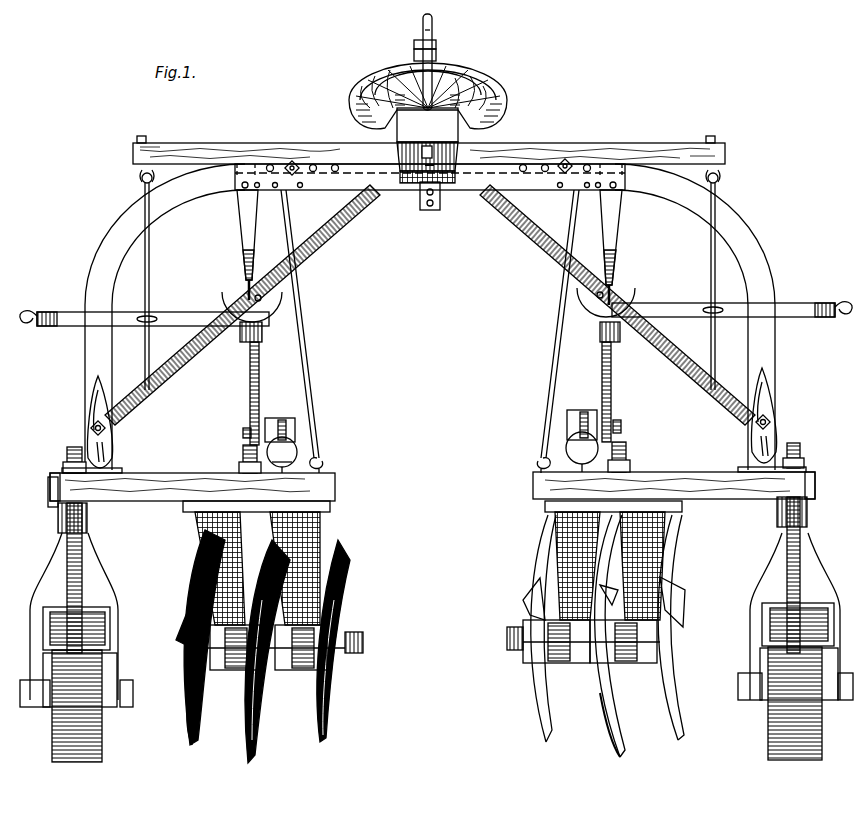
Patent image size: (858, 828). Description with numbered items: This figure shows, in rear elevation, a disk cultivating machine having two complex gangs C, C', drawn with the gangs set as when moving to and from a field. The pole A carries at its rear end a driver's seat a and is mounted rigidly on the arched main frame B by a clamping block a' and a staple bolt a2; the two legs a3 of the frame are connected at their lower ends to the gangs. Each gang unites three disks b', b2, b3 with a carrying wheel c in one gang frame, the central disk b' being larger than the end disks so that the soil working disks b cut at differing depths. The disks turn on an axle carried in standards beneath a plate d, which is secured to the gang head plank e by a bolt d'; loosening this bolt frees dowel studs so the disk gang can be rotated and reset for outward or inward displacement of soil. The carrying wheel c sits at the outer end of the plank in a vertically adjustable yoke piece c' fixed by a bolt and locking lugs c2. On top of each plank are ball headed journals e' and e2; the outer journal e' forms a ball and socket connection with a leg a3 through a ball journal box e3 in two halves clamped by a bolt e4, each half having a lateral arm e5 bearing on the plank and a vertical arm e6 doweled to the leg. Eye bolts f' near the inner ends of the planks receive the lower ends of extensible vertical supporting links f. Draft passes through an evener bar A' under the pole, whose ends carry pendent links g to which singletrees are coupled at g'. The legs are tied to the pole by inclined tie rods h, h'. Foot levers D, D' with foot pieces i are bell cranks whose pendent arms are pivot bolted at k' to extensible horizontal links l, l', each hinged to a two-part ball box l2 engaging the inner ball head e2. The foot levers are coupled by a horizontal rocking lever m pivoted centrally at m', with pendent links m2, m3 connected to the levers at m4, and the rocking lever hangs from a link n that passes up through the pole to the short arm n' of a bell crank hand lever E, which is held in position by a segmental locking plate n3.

The bell crank hand lever E is at (432, 58).
The short arm of hand lever n' is at (414, 41).
The segmental locking plate n3 is at (414, 56).
The driver's seat a is at (428, 92).
The pole A is at (427, 125).
The evener bar A' is at (429, 143).
The clamping block a' is at (419, 184).
The staple bolt a2 is at (440, 190).
The central pivot of rocking lever m' is at (416, 203).
The rocking lever m is at (430, 183).
The link n is at (436, 211).
The arched main frame B is at (430, 316).
The pendent link g is at (430, 280).
The singletree coupling g' is at (436, 302).
The link m2 is at (243, 222).
The link m3 is at (620, 227).
The foot piece i is at (268, 308).
The coupling of pendent link to foot lever m4 is at (242, 338).
The tie rod h is at (242, 305).
The tie rod h' is at (617, 305).
The foot lever D is at (262, 393).
The foot lever D' is at (620, 392).
The supporting link f is at (430, 324).
The eye bolt f' is at (430, 464).
The leg of arched frame a3 is at (92, 382).
The vertical arm of journal box half e6 is at (795, 388).
The clamping bolt e4 is at (92, 428).
The ball journal box e3 is at (104, 452).
The lateral arm of journal box half e5 is at (80, 458).
The ball headed journal e' is at (434, 459).
The gang head plank e is at (432, 477).
The pivot bolt k' is at (434, 425).
The horizontal link l is at (280, 416).
The horizontal link l' is at (582, 415).
The ball box l2 is at (290, 448).
The ball headed journal e2 is at (288, 468).
The bolt d' is at (437, 454).
The plate d is at (441, 563).
The end disk b2 is at (435, 630).
The central disk b' is at (439, 639).
The end disk b3 is at (436, 628).
The soil working disk b is at (403, 727).
The complex gang C is at (284, 705).
The complex gang C' is at (583, 703).
The locking lugs c2 is at (86, 525).
The yoke piece c' is at (436, 620).
The carrying wheel c is at (432, 704).